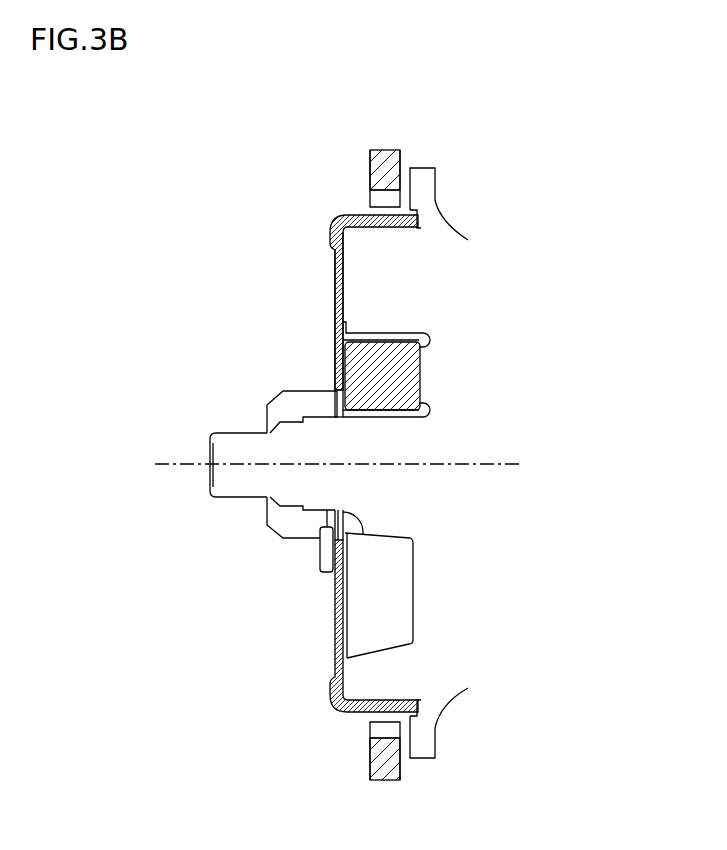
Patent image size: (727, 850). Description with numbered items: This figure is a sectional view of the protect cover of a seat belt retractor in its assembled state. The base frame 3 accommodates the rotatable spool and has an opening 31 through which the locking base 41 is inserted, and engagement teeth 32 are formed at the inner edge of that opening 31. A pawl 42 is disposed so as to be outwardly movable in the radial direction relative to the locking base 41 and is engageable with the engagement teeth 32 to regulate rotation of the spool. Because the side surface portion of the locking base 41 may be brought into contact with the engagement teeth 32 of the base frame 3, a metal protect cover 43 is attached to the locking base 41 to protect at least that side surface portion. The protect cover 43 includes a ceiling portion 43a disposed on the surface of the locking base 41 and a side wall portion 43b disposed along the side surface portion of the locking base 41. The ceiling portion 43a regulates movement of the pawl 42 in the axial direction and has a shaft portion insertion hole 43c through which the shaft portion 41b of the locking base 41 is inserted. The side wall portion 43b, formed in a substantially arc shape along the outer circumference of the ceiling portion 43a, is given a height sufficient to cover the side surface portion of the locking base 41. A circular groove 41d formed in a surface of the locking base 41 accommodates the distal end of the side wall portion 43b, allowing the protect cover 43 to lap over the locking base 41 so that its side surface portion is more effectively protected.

The base frame 3 is at (370, 164).
The opening 31 is at (368, 214).
The engagement teeth 32 is at (370, 200).
The locking base 41 is at (403, 509).
The shaft portion 41b is at (215, 433).
The circular groove 41d is at (420, 227).
The pawl 42 is at (378, 340).
The protect cover 43 is at (328, 600).
The ceiling portion 43a is at (334, 285).
The side wall portion 43b is at (350, 713).
The shaft portion insertion hole 43c is at (333, 407).